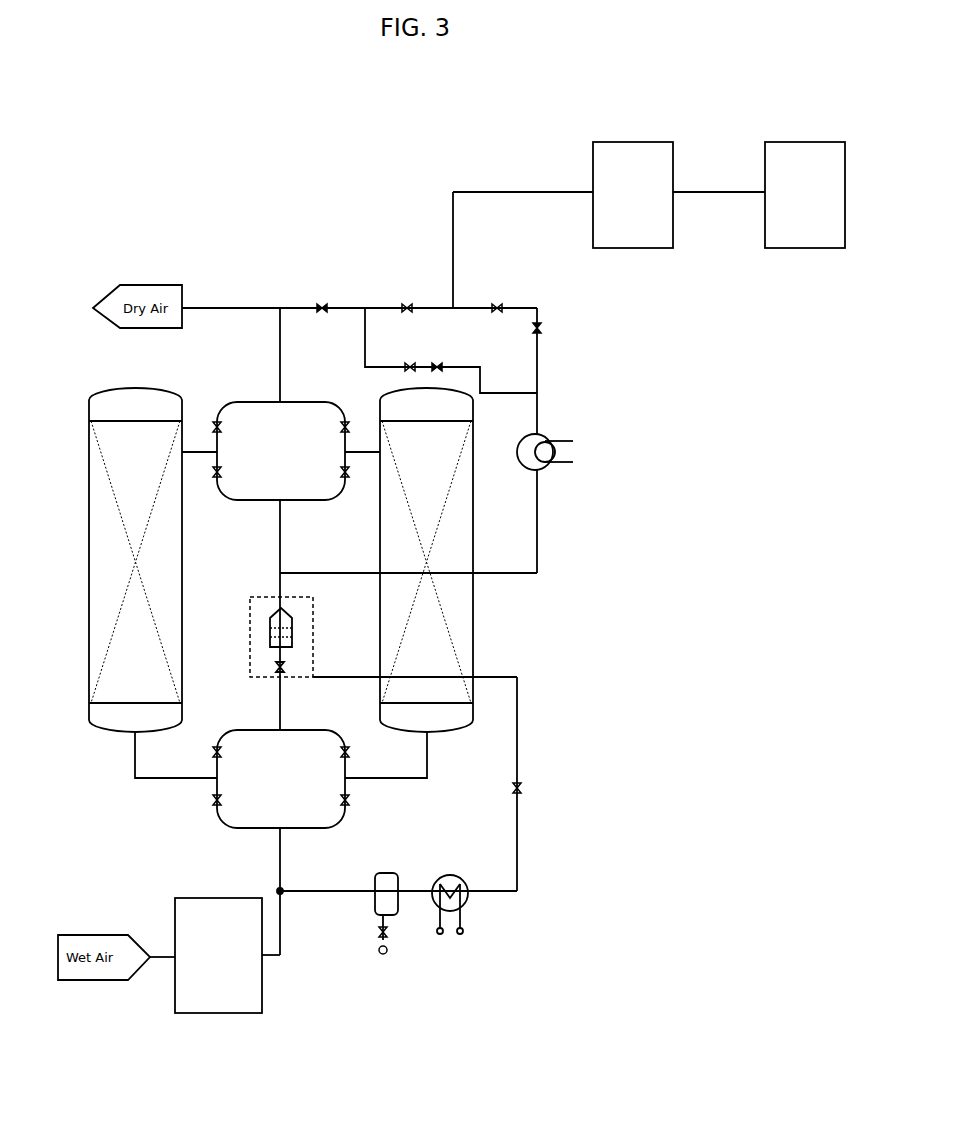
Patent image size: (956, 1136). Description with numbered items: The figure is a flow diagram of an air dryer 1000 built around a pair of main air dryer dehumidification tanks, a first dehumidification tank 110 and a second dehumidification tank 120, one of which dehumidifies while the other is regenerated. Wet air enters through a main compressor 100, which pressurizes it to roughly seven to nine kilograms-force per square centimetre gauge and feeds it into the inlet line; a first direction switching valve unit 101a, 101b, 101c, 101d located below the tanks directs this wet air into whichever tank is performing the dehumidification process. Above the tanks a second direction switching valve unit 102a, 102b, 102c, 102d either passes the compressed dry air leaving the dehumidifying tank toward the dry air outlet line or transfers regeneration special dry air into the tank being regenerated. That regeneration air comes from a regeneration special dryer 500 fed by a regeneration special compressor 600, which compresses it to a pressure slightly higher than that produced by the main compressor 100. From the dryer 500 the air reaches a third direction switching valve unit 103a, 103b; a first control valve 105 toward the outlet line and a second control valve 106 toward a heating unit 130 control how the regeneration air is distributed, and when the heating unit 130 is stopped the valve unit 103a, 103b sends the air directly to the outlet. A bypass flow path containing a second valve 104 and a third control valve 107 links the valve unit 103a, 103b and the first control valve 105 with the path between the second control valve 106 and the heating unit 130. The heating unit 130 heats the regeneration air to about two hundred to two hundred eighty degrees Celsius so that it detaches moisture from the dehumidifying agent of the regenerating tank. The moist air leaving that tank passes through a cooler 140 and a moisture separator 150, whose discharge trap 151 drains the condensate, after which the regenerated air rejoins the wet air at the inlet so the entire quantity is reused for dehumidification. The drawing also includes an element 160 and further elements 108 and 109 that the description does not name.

The air dryer 1000 is at (55, 178).
The main compressor 100 is at (250, 997).
The first dehumidification tank 110 is at (100, 447).
The second dehumidification tank 120 is at (448, 522).
The heating unit 130 is at (537, 438).
The cooler 140 is at (456, 875).
The moisture separator 150 is at (390, 868).
The discharge trap 151 is at (387, 954).
The heater 160 is at (298, 632).
The first direction switching valve unit 101a is at (213, 802).
The first direction switching valve unit 101b is at (350, 803).
The first direction switching valve unit 101c is at (213, 754).
The first direction switching valve unit 101d is at (350, 755).
The second direction switching valve unit 102a is at (222, 476).
The second direction switching valve unit 102b is at (222, 430).
The second direction switching valve unit 102c is at (341, 430).
The second direction switching valve unit 102d is at (341, 476).
The third direction switching valve unit 103a is at (410, 302).
The third direction switching valve unit 103b is at (500, 302).
The second valve 104 is at (418, 353).
The first control valve 105 is at (333, 294).
The second control valve 106 is at (543, 328).
The third control valve 107 is at (442, 362).
The heater valve 108 is at (275, 665).
The return valve 109 is at (522, 788).
The regeneration special dryer 500 is at (665, 163).
The regeneration special compressor 600 is at (835, 163).